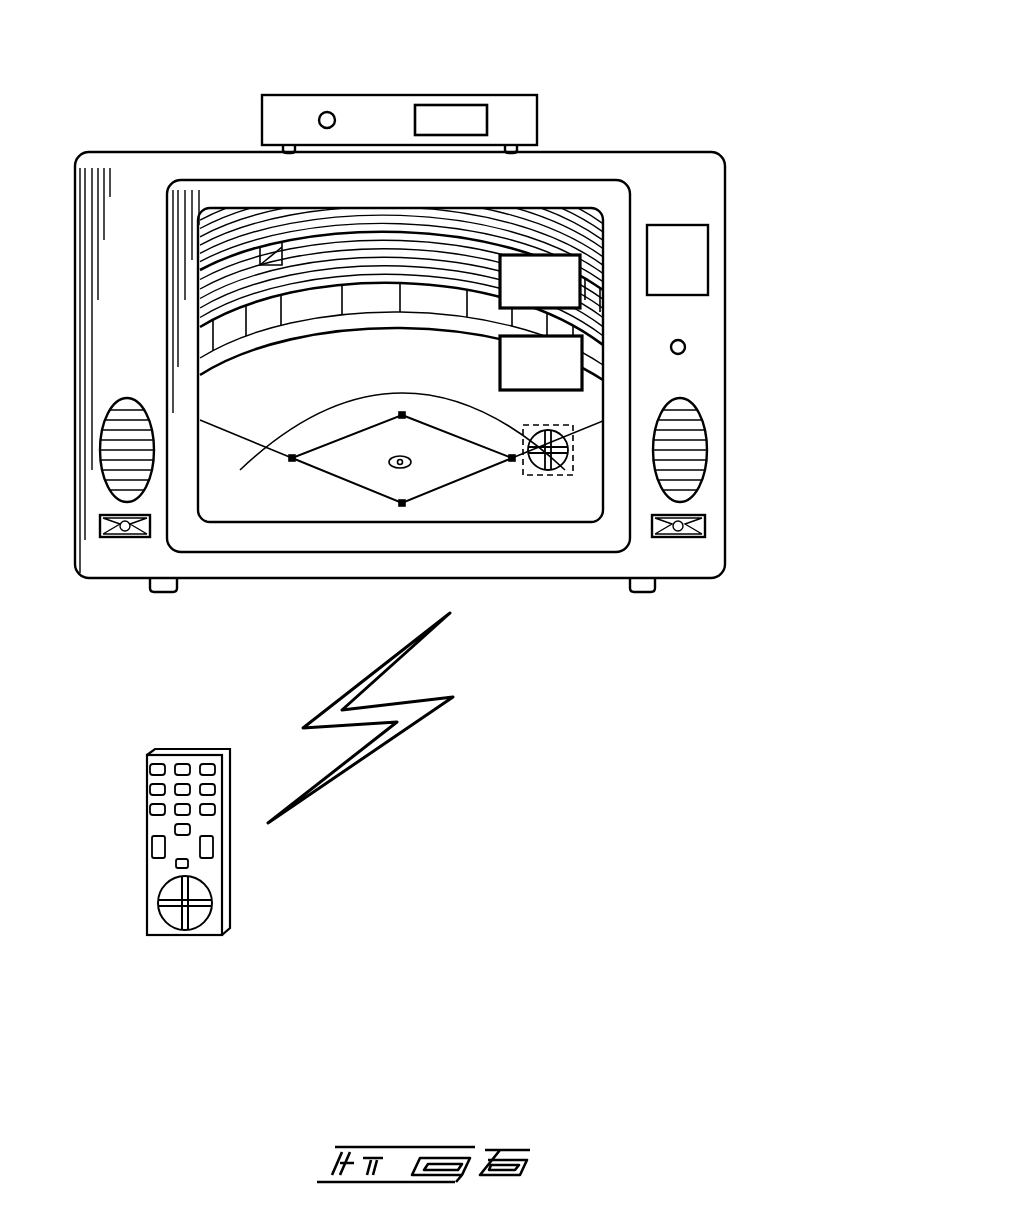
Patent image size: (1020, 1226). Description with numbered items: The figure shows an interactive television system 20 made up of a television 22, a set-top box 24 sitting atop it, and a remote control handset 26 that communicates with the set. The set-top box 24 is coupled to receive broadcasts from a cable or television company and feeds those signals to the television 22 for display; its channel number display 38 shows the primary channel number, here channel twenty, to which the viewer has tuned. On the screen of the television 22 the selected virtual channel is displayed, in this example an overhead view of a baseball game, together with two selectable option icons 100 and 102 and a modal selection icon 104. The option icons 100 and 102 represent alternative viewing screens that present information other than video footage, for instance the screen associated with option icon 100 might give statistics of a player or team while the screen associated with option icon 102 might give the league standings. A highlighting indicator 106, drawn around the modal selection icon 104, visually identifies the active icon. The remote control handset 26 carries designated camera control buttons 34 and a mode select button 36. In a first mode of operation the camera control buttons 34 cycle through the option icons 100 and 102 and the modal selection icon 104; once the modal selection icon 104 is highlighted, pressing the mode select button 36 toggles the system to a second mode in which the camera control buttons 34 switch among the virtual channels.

The interactive television system 20 is at (752, 683).
The television 22 is at (727, 293).
The set-top box 24 is at (553, 112).
The remote control handset 26 is at (232, 905).
The camera control buttons 34 is at (200, 920).
The mode select button 36 is at (176, 864).
The channel number display 38 is at (415, 117).
The option icon 100 is at (568, 298).
The option icon 102 is at (569, 380).
The modal selection icon 104 is at (541, 466).
The highlighting indicator 106 is at (573, 428).